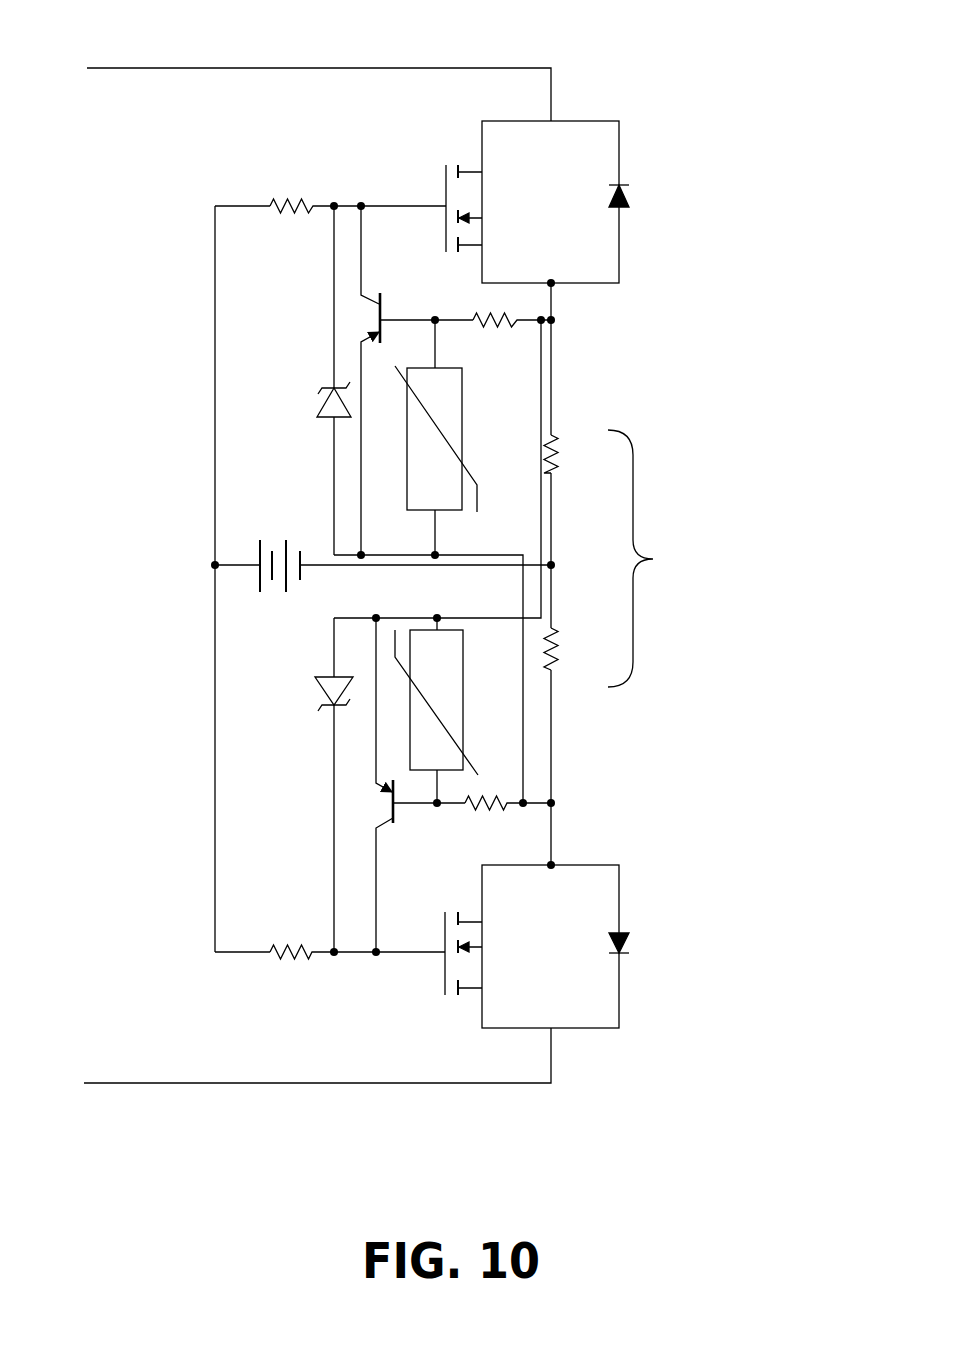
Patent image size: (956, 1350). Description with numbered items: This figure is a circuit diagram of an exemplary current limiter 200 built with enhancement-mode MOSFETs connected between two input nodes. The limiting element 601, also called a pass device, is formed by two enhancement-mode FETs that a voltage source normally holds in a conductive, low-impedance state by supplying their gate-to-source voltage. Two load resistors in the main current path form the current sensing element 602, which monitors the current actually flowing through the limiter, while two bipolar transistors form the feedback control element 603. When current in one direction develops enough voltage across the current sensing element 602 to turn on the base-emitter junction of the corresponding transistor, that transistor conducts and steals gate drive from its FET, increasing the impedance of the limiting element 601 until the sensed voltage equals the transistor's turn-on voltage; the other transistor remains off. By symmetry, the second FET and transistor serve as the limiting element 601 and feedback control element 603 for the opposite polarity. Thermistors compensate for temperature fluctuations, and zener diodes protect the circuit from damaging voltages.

The current limiter 200 is at (421, 562).
The limiting element 601 is at (436, 153).
The current sensing element 602 is at (680, 554).
The feedback control element 603 is at (390, 311).